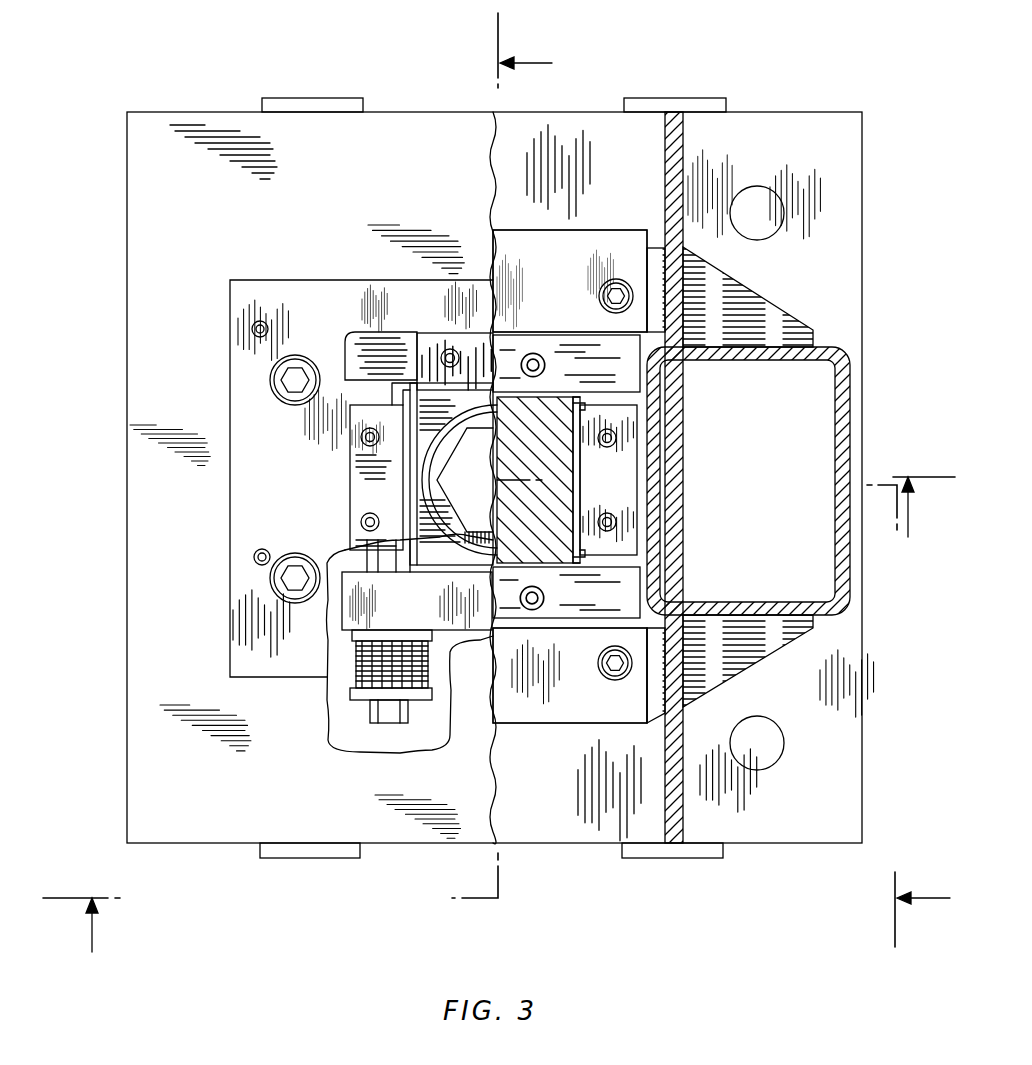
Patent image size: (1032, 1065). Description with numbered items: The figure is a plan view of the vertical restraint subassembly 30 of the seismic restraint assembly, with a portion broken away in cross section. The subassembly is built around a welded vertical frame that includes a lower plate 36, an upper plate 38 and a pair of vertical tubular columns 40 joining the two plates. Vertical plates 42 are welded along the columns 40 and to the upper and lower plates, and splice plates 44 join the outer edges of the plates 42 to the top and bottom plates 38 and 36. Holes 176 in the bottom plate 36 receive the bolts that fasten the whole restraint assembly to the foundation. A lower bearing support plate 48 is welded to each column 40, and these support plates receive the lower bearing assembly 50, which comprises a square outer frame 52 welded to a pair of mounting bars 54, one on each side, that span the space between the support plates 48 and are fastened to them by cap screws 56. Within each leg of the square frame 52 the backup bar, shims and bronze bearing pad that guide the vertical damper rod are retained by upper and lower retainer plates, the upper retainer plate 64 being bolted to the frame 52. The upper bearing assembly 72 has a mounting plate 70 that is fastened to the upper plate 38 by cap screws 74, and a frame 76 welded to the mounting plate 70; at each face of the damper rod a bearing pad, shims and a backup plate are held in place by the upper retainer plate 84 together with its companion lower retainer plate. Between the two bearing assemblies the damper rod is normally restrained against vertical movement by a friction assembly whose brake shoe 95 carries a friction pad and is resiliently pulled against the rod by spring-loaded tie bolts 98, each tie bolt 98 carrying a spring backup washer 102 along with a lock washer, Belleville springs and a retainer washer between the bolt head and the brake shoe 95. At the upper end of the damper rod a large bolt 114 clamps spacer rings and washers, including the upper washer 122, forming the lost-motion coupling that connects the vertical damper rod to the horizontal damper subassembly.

The vertical restraint subassembly 30 is at (752, 862).
The lower plate 36 is at (812, 177).
The upper plate 38 is at (234, 229).
The vertical tubular column 40 is at (846, 397).
The vertical plate 42 is at (680, 160).
The splice plate 44 is at (681, 98).
The lower bearing support plate 48 is at (782, 320).
The lower bearing assembly 50 is at (563, 735).
The square outer frame 52 is at (577, 334).
The mounting bar 54 is at (566, 240).
The cap screw 56 is at (623, 282).
The upper retainer plate 64 is at (560, 352).
The mounting plate 70 is at (268, 280).
The upper bearing assembly 72 is at (325, 266).
The cap screw 74 is at (272, 386).
The frame 76 is at (356, 354).
The upper retainer plate 84 is at (452, 340).
The brake shoe 95 is at (403, 618).
The tie bolt 98 is at (388, 725).
The spring backup washer 102 is at (356, 702).
The bolt 114 is at (458, 492).
The upper washer 122 is at (500, 428).
The hole 176 is at (750, 236).